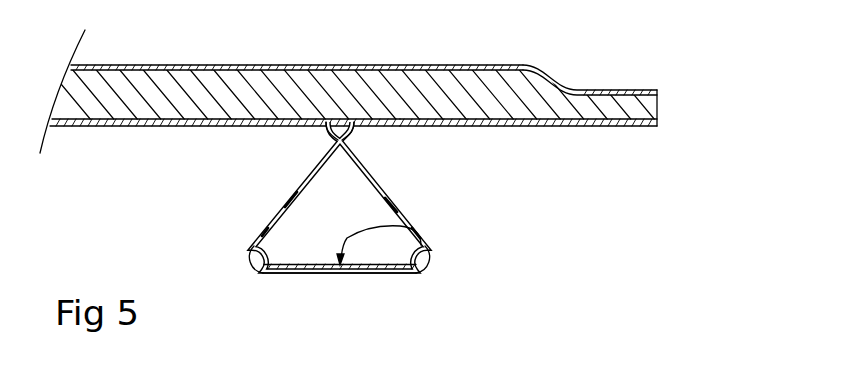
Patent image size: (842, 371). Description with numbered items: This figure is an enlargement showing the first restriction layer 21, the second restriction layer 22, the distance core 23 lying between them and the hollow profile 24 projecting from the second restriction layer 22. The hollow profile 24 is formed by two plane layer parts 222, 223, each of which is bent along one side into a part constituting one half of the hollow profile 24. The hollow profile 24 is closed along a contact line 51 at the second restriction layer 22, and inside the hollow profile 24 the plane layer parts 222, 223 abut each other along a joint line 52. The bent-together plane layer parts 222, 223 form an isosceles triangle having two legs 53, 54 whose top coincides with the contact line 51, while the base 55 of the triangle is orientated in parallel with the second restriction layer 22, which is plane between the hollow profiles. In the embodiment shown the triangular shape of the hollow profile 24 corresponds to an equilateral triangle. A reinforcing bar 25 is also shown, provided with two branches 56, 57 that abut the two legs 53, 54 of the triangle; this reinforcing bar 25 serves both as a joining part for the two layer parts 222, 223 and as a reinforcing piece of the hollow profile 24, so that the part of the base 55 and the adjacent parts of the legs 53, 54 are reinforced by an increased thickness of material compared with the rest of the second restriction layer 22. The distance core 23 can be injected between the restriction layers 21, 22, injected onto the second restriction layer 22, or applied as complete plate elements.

The first restriction layer 21 is at (185, 68).
The second restriction layer 22 is at (107, 130).
The plane layer part 222 is at (203, 126).
The plane layer part 223 is at (578, 126).
The distance core 23 is at (477, 85).
The hollow profile 24 is at (413, 190).
The reinforcing bar 25 is at (259, 275).
The contact line 51 is at (336, 140).
The joint line 52 is at (418, 231).
The leg 53 is at (306, 192).
The leg 54 is at (375, 188).
The base 55 is at (373, 276).
The branch 56 is at (268, 223).
The branch 57 is at (421, 238).